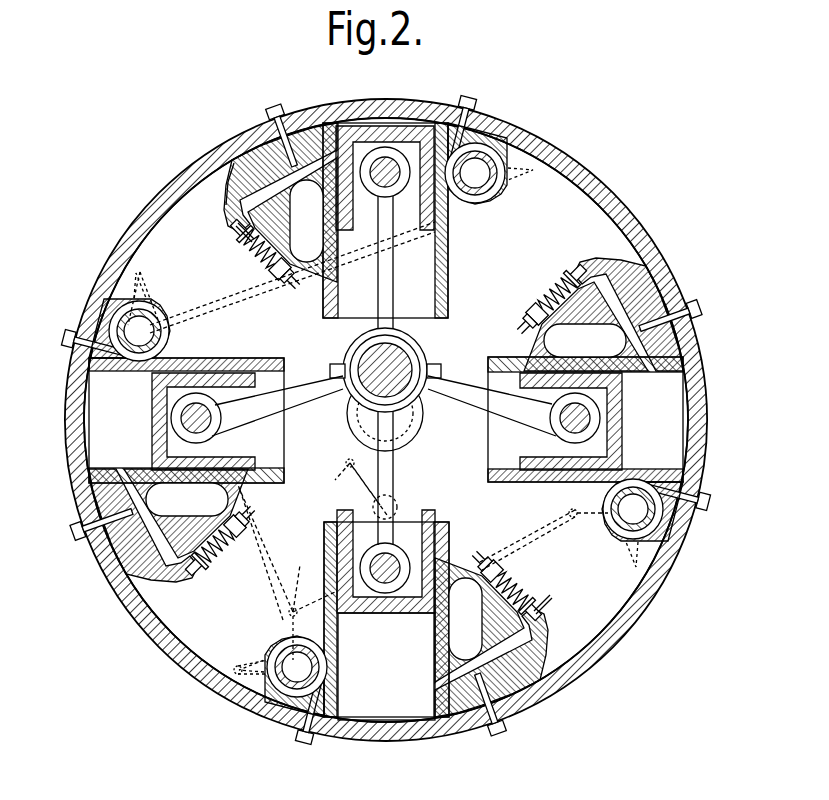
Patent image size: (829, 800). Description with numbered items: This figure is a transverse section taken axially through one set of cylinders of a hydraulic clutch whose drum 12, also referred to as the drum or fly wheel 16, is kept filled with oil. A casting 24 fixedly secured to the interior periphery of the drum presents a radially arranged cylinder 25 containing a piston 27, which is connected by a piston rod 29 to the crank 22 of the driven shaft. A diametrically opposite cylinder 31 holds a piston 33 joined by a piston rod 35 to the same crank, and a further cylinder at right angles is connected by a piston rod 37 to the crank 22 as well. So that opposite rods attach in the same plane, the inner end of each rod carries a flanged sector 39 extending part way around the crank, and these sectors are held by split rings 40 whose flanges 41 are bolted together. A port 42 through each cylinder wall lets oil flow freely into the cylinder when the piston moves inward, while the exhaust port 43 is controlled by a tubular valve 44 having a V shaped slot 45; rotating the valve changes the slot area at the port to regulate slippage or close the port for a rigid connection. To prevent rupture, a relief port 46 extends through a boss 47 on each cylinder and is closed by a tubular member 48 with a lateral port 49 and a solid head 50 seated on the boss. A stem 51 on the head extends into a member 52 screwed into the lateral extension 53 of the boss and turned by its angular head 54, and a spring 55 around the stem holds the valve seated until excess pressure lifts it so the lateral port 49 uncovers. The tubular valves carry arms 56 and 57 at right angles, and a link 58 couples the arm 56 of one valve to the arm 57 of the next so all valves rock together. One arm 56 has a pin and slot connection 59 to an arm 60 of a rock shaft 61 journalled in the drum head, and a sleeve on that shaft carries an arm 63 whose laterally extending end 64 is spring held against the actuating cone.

The drum 12 is at (640, 222).
The drum 16 is at (132, 212).
The crank 22 is at (408, 347).
The casting 24 is at (450, 252).
The cylinder 25 is at (432, 274).
The piston 27 is at (367, 232).
The piston rod 29 is at (392, 306).
The cylinder 31 is at (405, 722).
The piston 33 is at (385, 618).
The piston rod 35 is at (393, 482).
The piston rod 37 is at (490, 396).
The flanged sector 39 is at (420, 356).
The split ring 40 is at (440, 368).
The flange 41 is at (336, 364).
The port 42 is at (328, 222).
The exhaust port 43 is at (462, 105).
The tubular valve 44 is at (505, 135).
The V shaped slot 45 is at (485, 158).
The relief port 46 is at (318, 132).
The boss 47 is at (280, 108).
The tubular member 48 is at (228, 224).
The lateral port 49 is at (232, 176).
The head 50 is at (250, 245).
The stem 51 is at (276, 294).
The member 52 is at (272, 266).
The lateral extension 53 is at (282, 278).
The angular head 54 is at (294, 286).
The spring 55 is at (262, 252).
The arm 56 is at (289, 610).
The arm 57 is at (134, 290).
The link 58 is at (265, 527).
The pin and slot connection 59 is at (297, 586).
The arm 60 is at (312, 582).
The rock shaft 61 is at (400, 508).
The arm 63 is at (355, 479).
The laterally extending end 64 is at (348, 460).